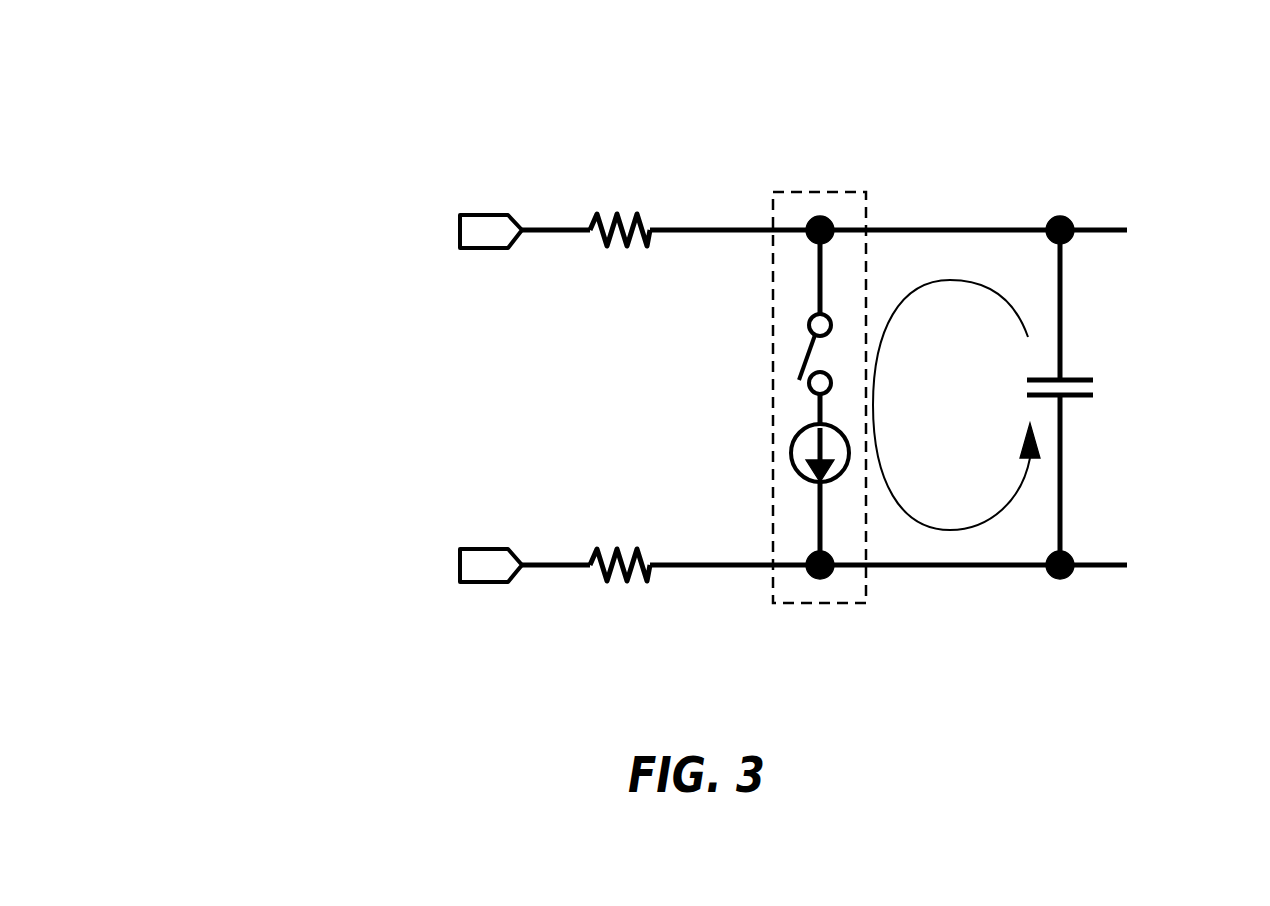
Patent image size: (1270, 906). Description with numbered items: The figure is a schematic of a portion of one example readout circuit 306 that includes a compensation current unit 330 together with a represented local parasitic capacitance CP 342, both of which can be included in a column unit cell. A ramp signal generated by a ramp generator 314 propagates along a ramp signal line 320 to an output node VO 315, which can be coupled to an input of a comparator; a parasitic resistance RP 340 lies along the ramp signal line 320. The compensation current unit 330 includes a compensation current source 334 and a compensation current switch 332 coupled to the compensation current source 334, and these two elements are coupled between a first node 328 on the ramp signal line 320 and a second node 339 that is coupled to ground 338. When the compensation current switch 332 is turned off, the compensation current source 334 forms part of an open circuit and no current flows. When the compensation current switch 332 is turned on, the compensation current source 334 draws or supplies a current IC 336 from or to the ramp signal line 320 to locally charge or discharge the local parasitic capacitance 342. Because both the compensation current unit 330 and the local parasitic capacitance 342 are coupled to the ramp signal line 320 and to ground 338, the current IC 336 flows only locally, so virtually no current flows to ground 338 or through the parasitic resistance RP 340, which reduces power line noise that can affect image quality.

The readout circuit 306 is at (302, 106).
The ramp generator 314 is at (480, 213).
The output node VO 315 is at (1172, 230).
The ramp signal line 320 is at (550, 228).
The first node 328 is at (822, 217).
The compensation current unit 330 is at (772, 388).
The compensation current switch 332 is at (810, 347).
The compensation current source 334 is at (790, 450).
The current IC 336 is at (922, 400).
The ground 338 is at (482, 547).
The second node 339 is at (822, 582).
The parasitic resistance RP 340 is at (618, 178).
The local parasitic capacitance CP 342 is at (1150, 384).